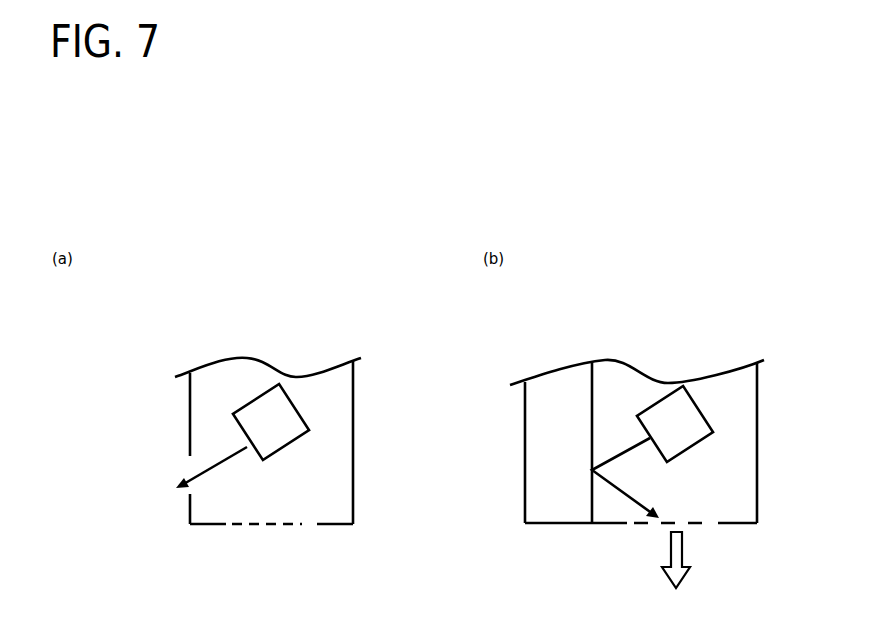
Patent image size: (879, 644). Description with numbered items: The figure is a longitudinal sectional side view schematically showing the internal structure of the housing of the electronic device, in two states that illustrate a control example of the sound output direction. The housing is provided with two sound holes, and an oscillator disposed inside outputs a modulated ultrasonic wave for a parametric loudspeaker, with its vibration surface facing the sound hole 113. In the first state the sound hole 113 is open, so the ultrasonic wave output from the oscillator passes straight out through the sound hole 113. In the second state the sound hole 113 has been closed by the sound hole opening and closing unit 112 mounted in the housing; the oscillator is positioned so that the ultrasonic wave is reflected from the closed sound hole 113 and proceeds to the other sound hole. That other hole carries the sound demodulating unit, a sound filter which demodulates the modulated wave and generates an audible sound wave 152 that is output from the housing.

The sound hole opening and closing unit 112 is at (557, 376).
The sound hole 113 is at (188, 465).
The audible sound wave 152 is at (683, 560).